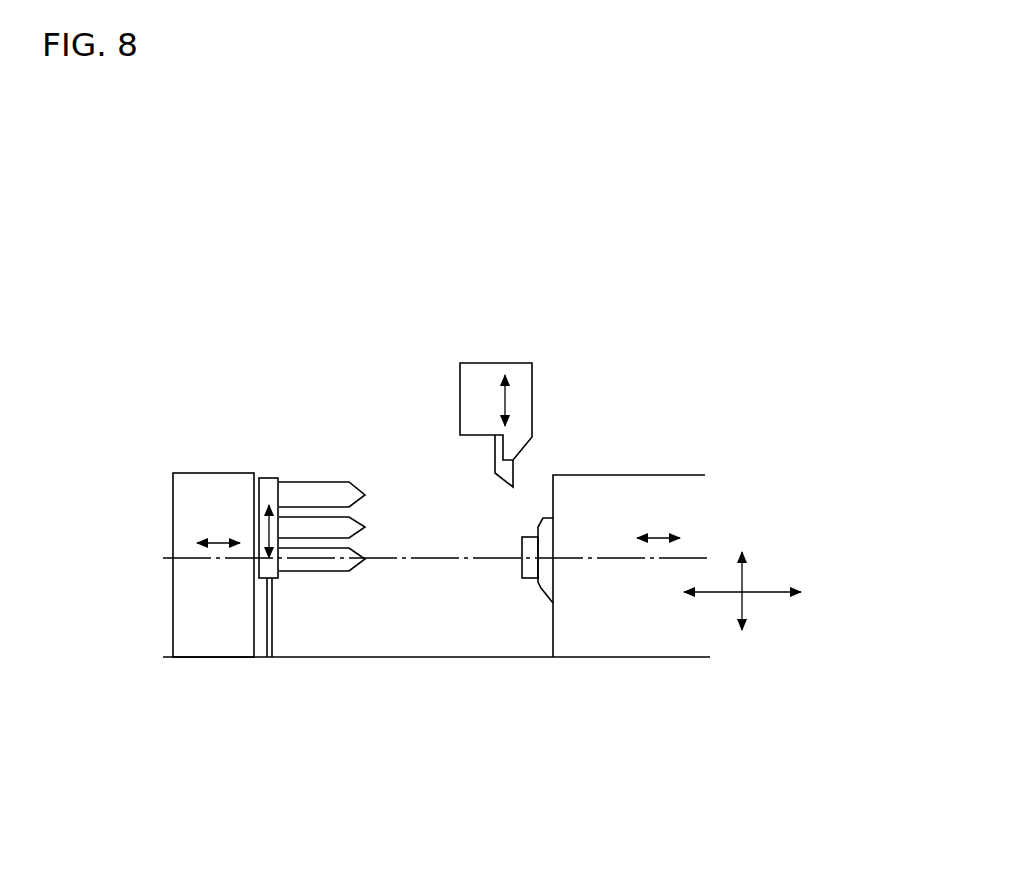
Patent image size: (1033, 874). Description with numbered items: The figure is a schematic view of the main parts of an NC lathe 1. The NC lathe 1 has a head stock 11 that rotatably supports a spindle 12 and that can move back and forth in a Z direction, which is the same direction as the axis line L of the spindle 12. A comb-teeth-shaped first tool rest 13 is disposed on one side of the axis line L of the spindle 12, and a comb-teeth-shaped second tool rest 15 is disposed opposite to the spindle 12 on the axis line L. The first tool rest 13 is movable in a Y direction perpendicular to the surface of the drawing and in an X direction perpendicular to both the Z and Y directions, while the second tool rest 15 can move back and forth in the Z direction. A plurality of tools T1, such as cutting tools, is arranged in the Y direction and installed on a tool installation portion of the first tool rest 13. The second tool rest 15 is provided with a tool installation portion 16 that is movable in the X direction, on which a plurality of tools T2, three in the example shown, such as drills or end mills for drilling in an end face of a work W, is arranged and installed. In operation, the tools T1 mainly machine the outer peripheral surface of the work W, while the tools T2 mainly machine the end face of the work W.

The NC lathe 1 is at (652, 290).
The head stock 11 is at (677, 483).
The spindle 12 is at (546, 586).
The first tool rest 13 is at (464, 361).
The second tool rest 15 is at (193, 661).
The tool installation portion 16 is at (270, 490).
The tools T1 is at (495, 462).
The tools T2 is at (328, 567).
The work W is at (524, 540).
The axis line L is at (620, 556).